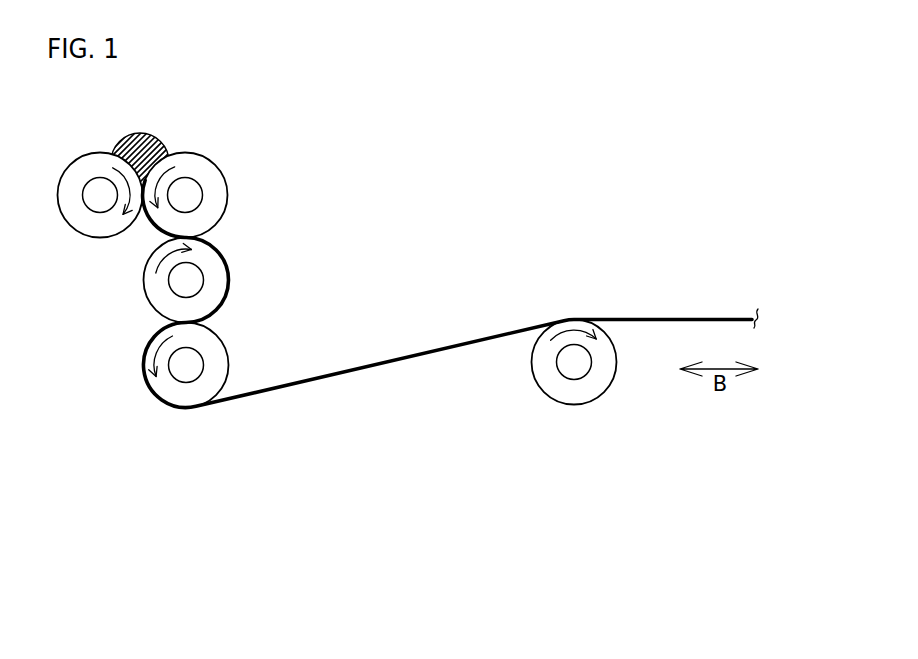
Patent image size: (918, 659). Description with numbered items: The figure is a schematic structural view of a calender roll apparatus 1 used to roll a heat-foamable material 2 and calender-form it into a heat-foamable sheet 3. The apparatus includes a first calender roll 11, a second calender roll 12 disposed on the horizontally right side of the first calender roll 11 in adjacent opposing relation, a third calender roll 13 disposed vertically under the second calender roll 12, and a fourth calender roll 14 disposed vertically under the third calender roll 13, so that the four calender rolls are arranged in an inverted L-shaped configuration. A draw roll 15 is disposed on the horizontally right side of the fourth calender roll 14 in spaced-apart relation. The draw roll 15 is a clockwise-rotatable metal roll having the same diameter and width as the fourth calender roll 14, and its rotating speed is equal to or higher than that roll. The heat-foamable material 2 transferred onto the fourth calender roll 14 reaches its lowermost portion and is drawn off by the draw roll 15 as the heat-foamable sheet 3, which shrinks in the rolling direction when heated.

The calender roll apparatus 1 is at (327, 495).
The heat-foamable material 2 is at (145, 133).
The heat-foamable sheet 3 is at (690, 318).
The first calender roll 11 is at (76, 158).
The second calender roll 12 is at (227, 182).
The third calender roll 13 is at (143, 278).
The fourth calender roll 14 is at (228, 347).
The draw roll 15 is at (598, 403).